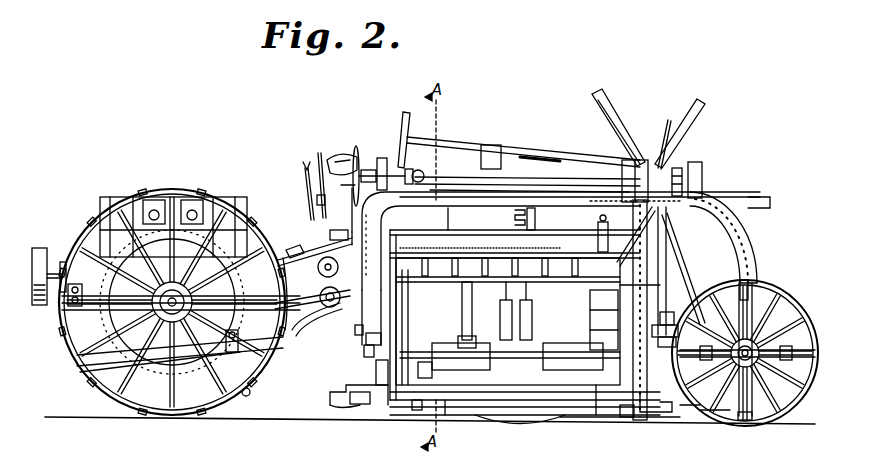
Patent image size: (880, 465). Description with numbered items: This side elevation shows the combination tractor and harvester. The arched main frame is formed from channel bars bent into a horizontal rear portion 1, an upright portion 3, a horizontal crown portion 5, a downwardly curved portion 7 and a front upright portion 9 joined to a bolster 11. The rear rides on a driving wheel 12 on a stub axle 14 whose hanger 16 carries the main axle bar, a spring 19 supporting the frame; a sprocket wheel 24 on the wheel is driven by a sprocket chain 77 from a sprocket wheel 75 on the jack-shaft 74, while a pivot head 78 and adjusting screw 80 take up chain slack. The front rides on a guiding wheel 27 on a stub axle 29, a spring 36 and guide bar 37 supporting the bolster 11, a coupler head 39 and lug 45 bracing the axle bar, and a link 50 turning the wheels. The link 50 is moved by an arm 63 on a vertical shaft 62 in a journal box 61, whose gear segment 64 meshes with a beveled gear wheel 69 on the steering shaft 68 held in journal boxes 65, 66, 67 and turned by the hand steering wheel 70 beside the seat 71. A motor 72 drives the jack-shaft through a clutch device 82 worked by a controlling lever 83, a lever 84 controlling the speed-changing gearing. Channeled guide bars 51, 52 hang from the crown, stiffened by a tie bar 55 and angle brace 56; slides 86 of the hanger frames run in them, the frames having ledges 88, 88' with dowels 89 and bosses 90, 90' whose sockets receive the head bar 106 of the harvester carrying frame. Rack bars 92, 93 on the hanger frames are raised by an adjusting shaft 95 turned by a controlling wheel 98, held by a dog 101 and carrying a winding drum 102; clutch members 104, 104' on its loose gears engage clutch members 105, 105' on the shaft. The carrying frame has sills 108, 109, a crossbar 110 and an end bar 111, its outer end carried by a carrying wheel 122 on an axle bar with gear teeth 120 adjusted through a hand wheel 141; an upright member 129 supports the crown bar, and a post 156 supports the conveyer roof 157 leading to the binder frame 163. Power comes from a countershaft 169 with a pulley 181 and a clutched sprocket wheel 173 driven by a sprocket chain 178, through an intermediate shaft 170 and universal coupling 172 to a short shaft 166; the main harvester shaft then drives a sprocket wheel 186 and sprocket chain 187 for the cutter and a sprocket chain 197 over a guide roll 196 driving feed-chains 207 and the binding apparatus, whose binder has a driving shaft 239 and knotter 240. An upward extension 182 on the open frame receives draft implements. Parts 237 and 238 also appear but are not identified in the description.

The horizontal rear portion 1 is at (66, 305).
The upright portion 3 is at (398, 214).
The horizontal crown portion 5 is at (515, 307).
The curved portion 7 is at (745, 228).
The upright portion 9 is at (755, 268).
The bolster 11 is at (720, 340).
The driving wheel 12 is at (147, 190).
The stub axle 14 is at (105, 395).
The hanger 16 is at (160, 360).
The spring 19 is at (78, 345).
The sprocket wheel 24 is at (90, 368).
The guiding wheel 27 is at (790, 424).
The stub axle 29 is at (743, 425).
The spring 36 is at (755, 320).
The guide bar 37 is at (760, 292).
The coupler head 39 is at (670, 314).
The lug 45 is at (659, 406).
The link 50 is at (713, 422).
The guide bar 51 is at (372, 346).
The guide bar 52 is at (648, 420).
The tie bar 55 is at (368, 352).
The angle brace 56 is at (398, 312).
The journal box 61 is at (677, 333).
The shaft 62 is at (668, 228).
The arm 63 is at (690, 415).
The gear segment 64 is at (672, 252).
The journal box 65 is at (700, 170).
The journal box 66 is at (491, 145).
The journal box 67 is at (634, 160).
The steering shaft 68 is at (545, 157).
The beveled gear wheel 69 is at (680, 168).
The hand steering wheel 70 is at (405, 113).
The seat 71 is at (340, 155).
The motor 72 is at (115, 200).
The jack-shaft 74 is at (320, 328).
The sprocket wheel 75 is at (335, 308).
The sprocket chain 77 is at (234, 353).
The pivot head 78 is at (306, 330).
The adjusting screw 80 is at (295, 330).
The clutch device 82 is at (249, 395).
The controlling lever 83 is at (306, 168).
The lever 84 is at (318, 155).
The slide 86 is at (378, 372).
The ledge 88 is at (365, 412).
The ledge 88' is at (632, 425).
The dowel 89 is at (362, 405).
The boss 90 is at (340, 422).
The boss 90' is at (600, 438).
The rack bar 92 is at (381, 158).
The rack bar 93 is at (662, 150).
The adjusting and supporting shaft 95 is at (527, 177).
The controlling wheel 98 is at (356, 147).
The dog 101 is at (413, 170).
The winding drum 102 is at (580, 190).
The clutch member 104 is at (379, 158).
The clutch member 104' is at (615, 200).
The clutch member 105 is at (503, 207).
The clutch member 105' is at (680, 126).
The head bar 106 is at (466, 418).
The main bar 108 is at (418, 411).
The main bar 109 is at (592, 398).
The crossbar 110 is at (535, 418).
The end bar 111 is at (448, 416).
The gear teeth 120 is at (528, 221).
The carrying wheel 122 is at (505, 428).
The upright member 129 is at (508, 219).
The hand wheel 141 is at (358, 336).
The post 156 is at (430, 375).
The roof 157 is at (448, 240).
The binder frame 163 is at (360, 338).
The short shaft 166 is at (398, 292).
The countershaft 169 is at (60, 263).
The intermediate shaft 170 is at (300, 246).
The universal coupling 172 is at (340, 230).
The sprocket wheel 173 is at (100, 248).
The sprocket chain 178 is at (80, 235).
The pulley 181 is at (39, 247).
The upward extension 182 is at (140, 198).
The sprocket wheel 186 is at (655, 270).
The sprocket chain 187 is at (656, 286).
The guide roll 196 is at (598, 224).
The sprocket chain 197 is at (595, 242).
The feed-chain 207 is at (515, 246).
The pipe 237 is at (596, 110).
The exhaust pipe 238 is at (597, 93).
The driving shaft 239 is at (598, 319).
The knotter 240 is at (520, 371).